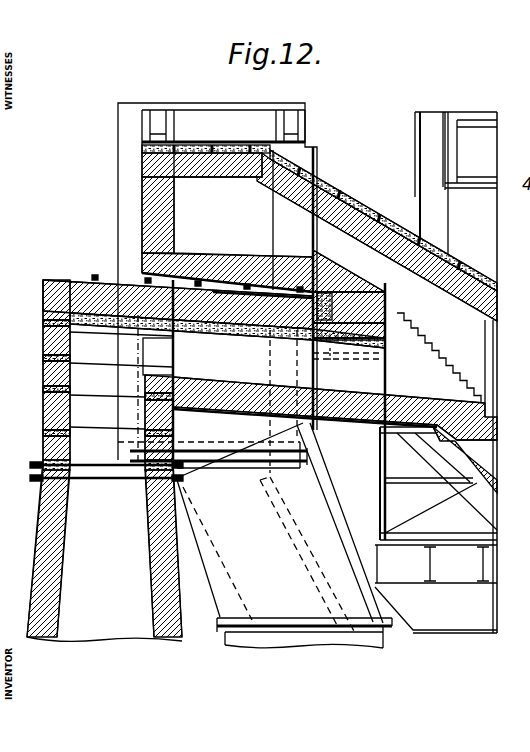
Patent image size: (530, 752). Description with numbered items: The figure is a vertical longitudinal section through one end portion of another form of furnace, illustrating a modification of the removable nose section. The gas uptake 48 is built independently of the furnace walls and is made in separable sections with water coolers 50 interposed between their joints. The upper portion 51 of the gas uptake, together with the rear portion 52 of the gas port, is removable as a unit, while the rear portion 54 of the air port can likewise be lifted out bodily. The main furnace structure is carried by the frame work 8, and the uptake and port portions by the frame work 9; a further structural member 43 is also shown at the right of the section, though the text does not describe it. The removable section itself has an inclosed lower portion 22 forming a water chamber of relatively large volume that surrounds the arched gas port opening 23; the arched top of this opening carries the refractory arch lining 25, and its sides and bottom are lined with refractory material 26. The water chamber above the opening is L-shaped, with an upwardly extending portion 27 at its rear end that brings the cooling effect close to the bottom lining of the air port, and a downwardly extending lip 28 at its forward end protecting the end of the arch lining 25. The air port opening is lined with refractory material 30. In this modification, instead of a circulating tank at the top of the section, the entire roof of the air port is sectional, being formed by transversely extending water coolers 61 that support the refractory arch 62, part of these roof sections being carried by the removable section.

The frame work of the main furnace structure 8 is at (427, 148).
The frame work of the uptake and port portions 9 is at (196, 110).
The inclosed lower portion 22 is at (357, 425).
The arched gas port opening 23 is at (357, 373).
The refractory arch lining 25 is at (333, 348).
The refractory material 26 is at (355, 407).
The upwardly extending portion 27 is at (349, 294).
The downwardly extending lip or projection 28 is at (383, 336).
The refractory material 30 is at (349, 295).
The right wall 43 is at (511, 372).
The gas uptake 48 is at (104, 550).
The water coolers 50 is at (43, 457).
The upper portion of the gas uptake 51 is at (47, 408).
The rear portion of the gas port 52 is at (183, 376).
The rear portion of the air port 54 is at (227, 217).
The water coolers 61 is at (333, 181).
The refractory arch 62 is at (381, 220).